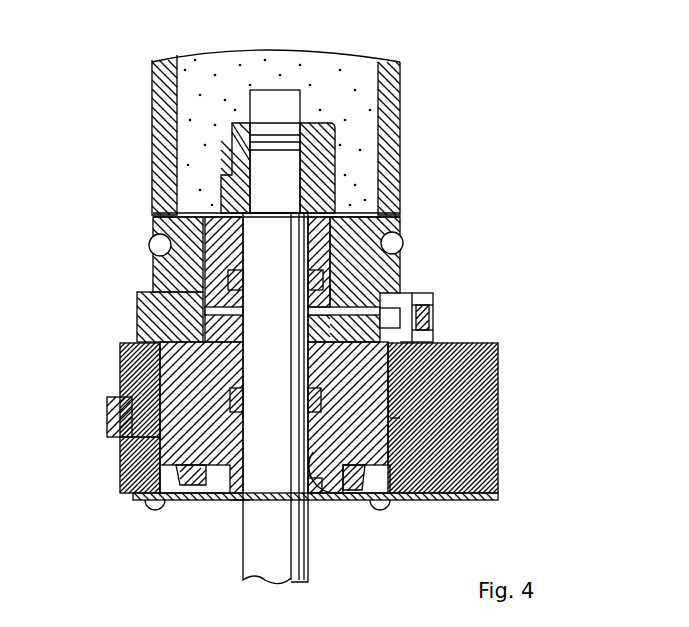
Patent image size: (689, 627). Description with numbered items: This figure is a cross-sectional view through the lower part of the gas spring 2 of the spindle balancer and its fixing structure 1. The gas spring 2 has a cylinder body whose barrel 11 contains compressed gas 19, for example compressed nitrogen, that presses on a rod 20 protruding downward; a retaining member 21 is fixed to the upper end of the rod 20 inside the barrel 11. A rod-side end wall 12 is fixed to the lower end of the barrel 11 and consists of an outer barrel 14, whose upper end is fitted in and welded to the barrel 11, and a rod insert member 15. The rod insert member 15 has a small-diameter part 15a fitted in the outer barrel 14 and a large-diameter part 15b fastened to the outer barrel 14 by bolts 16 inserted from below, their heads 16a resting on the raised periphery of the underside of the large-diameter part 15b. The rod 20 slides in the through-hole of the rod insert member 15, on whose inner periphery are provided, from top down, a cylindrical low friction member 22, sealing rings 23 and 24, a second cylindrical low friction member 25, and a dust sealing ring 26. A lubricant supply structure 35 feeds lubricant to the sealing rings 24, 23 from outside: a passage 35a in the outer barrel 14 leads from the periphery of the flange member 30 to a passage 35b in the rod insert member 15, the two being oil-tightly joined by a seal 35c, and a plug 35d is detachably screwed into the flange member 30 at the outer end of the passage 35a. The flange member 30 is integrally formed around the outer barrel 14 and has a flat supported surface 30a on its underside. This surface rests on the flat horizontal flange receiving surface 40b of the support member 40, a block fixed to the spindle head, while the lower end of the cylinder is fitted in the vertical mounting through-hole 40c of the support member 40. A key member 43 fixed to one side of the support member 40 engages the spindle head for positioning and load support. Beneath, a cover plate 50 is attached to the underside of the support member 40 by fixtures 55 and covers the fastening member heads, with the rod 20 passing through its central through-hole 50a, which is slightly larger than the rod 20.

The fixing structure 1 is at (515, 162).
The gas spring 2 is at (432, 105).
The barrel 11 is at (160, 98).
The rod-side end wall 12 is at (137, 300).
The outer barrel 14 is at (154, 274).
The rod insert member 15 is at (172, 222).
The small-diameter part 15a is at (150, 247).
The large-diameter part 15b is at (123, 455).
The bolt 16 is at (193, 488).
The head 16a is at (360, 482).
The compressed gas 19 is at (255, 70).
The rod 20 is at (308, 570).
The retaining member 21 is at (328, 120).
The cylindrical low friction member 22 is at (385, 195).
The sealing ring 23 is at (240, 278).
The sealing ring 24 is at (241, 398).
The cylindrical low friction member 25 is at (335, 483).
The dust sealing ring 26 is at (318, 498).
The flange member 30 is at (137, 330).
The supported surface 30a is at (160, 372).
The lubricant supply structure 35 is at (450, 292).
The passage 35a is at (398, 270).
The passage 35b is at (400, 220).
The seal 35c is at (402, 244).
The plug 35d is at (433, 310).
The support member 40 is at (500, 370).
The flange receiving surface 40b is at (122, 355).
The mounting through-hole 40c is at (392, 412).
The key member 43 is at (107, 410).
The cover plate 50 is at (470, 501).
The through-hole 50a is at (248, 503).
The fixture 55 is at (157, 508).